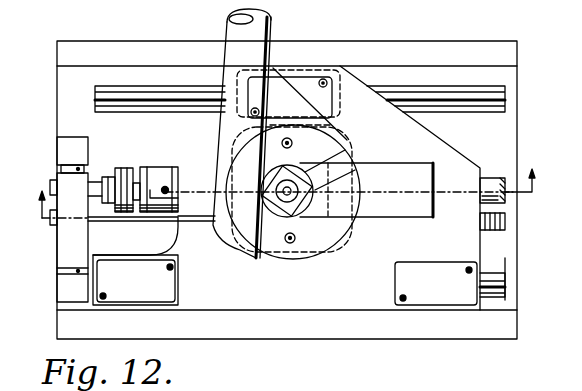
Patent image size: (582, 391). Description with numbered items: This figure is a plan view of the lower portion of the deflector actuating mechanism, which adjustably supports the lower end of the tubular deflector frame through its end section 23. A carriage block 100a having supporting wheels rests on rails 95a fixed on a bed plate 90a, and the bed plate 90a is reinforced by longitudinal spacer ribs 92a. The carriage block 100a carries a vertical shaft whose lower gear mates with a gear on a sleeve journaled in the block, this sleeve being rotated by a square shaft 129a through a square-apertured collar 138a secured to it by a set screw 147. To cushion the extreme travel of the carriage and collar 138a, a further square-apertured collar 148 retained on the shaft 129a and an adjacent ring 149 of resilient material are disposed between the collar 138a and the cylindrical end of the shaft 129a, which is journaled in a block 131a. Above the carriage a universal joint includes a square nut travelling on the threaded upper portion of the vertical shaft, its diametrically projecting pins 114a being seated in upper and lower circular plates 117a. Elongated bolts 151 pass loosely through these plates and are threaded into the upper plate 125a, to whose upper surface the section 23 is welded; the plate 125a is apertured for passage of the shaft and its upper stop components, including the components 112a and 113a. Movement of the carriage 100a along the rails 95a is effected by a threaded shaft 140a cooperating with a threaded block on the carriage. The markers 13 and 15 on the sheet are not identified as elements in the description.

The end section 23 is at (224, 37).
The longitudinal spacer ribs 92a is at (457, 42).
The rails 95a is at (505, 100).
The bed plate 90a is at (507, 260).
The carriage block 100a is at (406, 249).
The circular plates 117a is at (345, 136).
The upper plate 125a is at (335, 250).
The upper stop component 112a is at (292, 212).
The elongated bolts 151 is at (290, 138).
The pins 114a is at (212, 252).
The axis 13 is at (284, 193).
The block 131a is at (70, 243).
The square shaft 129a is at (52, 180).
The threaded shaft 140a is at (507, 218).
The ring 149 is at (130, 170).
The square-apertured collar 148 is at (120, 208).
The square-apertured collar 138a is at (153, 170).
The set screw 147 is at (165, 188).
The member 15 is at (282, 376).
The upper stop component 113a is at (314, 380).